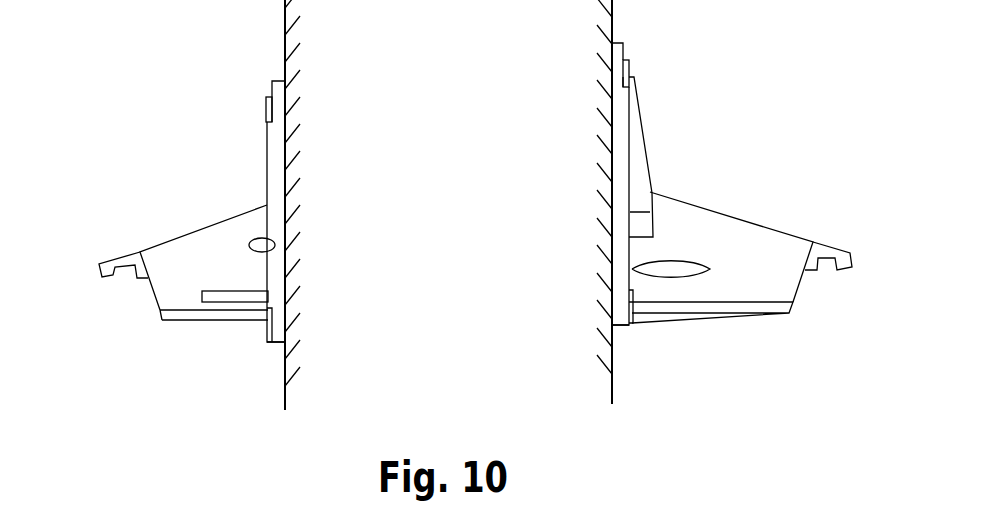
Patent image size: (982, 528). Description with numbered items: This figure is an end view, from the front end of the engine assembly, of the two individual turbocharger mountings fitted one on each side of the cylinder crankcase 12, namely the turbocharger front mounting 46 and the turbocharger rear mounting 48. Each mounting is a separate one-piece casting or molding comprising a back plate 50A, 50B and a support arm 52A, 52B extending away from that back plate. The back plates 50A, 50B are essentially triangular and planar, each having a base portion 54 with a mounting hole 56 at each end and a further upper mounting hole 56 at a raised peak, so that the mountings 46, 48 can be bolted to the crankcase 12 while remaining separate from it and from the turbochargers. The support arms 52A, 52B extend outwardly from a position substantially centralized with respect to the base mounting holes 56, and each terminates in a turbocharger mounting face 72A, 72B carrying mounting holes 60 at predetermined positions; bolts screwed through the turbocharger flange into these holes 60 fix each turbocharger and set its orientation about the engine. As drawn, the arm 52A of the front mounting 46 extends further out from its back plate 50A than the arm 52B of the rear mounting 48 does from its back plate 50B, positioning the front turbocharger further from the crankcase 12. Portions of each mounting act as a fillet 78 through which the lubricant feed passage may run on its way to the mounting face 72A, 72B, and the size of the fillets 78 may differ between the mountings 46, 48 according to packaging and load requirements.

The cylinder crankcase 12 is at (459, 270).
The turbocharger front mounting 46 is at (697, 180).
The turbocharger rear mounting 48 is at (211, 203).
The back plate 50A is at (618, 136).
The back plate 50B is at (276, 150).
The support arm 52A is at (742, 284).
The support arm 52B is at (204, 312).
The base portion 54 is at (280, 345).
The mounting hole 56 is at (273, 107).
The mounting hole 60 is at (114, 277).
The turbocharger mounting face 72A is at (772, 226).
The turbocharger mounting face 72B is at (167, 241).
The fillet 78 is at (264, 242).